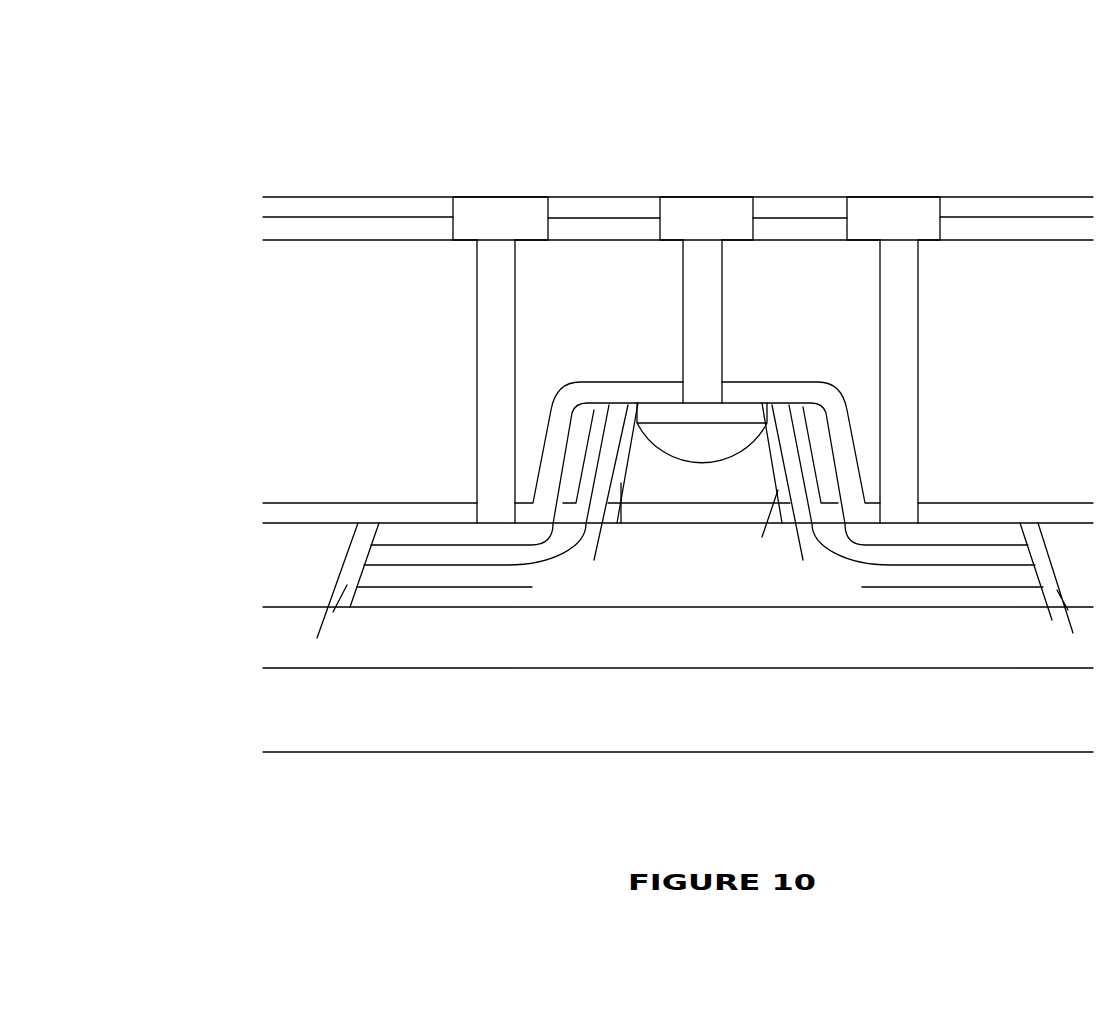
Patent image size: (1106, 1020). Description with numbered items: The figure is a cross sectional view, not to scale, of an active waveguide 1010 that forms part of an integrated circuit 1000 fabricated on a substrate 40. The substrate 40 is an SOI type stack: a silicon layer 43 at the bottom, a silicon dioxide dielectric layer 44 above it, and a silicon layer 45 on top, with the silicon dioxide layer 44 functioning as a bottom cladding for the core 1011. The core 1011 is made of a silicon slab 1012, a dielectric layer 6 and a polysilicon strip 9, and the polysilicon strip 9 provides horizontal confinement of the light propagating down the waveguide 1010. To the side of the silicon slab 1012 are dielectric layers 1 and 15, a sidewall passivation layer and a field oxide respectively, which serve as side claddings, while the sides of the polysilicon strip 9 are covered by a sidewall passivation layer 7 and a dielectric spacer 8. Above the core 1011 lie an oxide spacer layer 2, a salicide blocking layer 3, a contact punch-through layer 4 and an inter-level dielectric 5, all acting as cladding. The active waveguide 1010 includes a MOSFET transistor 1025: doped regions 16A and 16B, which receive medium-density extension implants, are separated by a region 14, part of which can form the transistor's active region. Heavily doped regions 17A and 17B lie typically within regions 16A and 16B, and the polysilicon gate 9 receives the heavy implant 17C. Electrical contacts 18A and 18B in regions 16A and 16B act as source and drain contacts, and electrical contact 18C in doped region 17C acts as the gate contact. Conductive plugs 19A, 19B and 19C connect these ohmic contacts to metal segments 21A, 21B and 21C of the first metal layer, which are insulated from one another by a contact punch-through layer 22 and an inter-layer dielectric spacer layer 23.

The dielectric layer 1 is at (691, 590).
The oxide spacer layer 2 is at (606, 425).
The salicide blocking layer 3 is at (580, 425).
The contact punch-through layer 4 is at (560, 405).
The inter-level dielectric 5 is at (280, 289).
The dielectric layer 6 is at (690, 513).
The dielectric layer 7 is at (695, 522).
The dielectric spacer 8 is at (693, 500).
The polysilicon strip 9 is at (704, 498).
The region 14 is at (697, 597).
The field oxide 15 is at (302, 561).
The doped region 16A is at (460, 577).
The doped region 16B is at (868, 570).
The region 17A is at (488, 557).
The region 17B is at (958, 557).
The implant 17C is at (683, 448).
The electrical contact 18A is at (452, 542).
The electrical contact 18B is at (938, 537).
The electrical contact 18C is at (723, 412).
The conductive plug 19A is at (500, 323).
The conductive plug 19B is at (895, 317).
The conductive plug 19C is at (708, 270).
The metal segment 21A is at (521, 230).
The metal segment 21B is at (914, 230).
The metal segment 21C is at (728, 230).
The contact punch-through layer 22 is at (605, 228).
The inter-layer dielectric spacer layer 23 is at (388, 207).
The substrate 40 is at (224, 666).
The silicon layer 43 is at (277, 724).
The dielectric layer 44 is at (344, 658).
The silicon layer 45 is at (224, 583).
The integrated circuit 1000 is at (356, 790).
The active waveguide 1010 is at (737, 725).
The core 1011 is at (745, 281).
The silicon slab 1012 is at (638, 583).
The MOSFET transistor 1025 is at (693, 145).